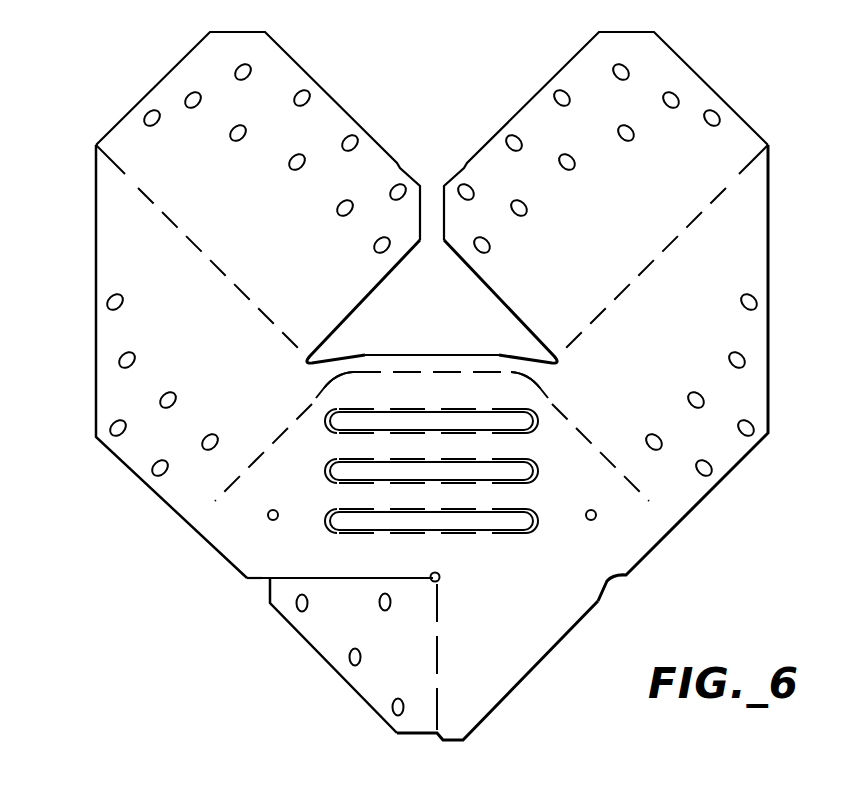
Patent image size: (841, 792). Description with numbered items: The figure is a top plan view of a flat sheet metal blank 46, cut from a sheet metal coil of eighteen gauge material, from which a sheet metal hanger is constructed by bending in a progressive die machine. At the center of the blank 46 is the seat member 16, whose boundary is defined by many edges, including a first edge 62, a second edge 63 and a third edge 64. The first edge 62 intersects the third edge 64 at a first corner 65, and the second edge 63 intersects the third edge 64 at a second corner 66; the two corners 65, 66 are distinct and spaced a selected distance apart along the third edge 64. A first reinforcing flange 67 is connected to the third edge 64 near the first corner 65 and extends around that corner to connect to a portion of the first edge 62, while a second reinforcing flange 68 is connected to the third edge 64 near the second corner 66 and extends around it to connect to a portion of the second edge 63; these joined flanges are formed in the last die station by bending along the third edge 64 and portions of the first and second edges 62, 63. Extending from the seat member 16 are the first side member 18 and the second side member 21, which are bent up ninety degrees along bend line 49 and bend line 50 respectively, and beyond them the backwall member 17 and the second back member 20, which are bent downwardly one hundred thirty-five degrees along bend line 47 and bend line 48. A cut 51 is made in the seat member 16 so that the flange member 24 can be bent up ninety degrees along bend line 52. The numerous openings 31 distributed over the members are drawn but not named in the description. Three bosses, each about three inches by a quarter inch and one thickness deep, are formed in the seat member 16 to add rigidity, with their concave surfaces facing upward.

The sheet metal blank 46 is at (426, 376).
The fastener holes 31 is at (243, 125).
The backwall member 17 is at (231, 197).
The first side member 18 is at (224, 361).
The second back member 20 is at (633, 197).
The second side member 21 is at (639, 373).
The seat member 16 is at (436, 522).
The flange member 24 is at (333, 655).
The bend line 47 is at (136, 186).
The bend line 48 is at (730, 186).
The bend line 49 is at (204, 512).
The bend line 50 is at (661, 512).
The cut 51 is at (300, 576).
The bend line 52 is at (446, 710).
The first edge 62 is at (240, 482).
The second edge 63 is at (624, 482).
The third edge 64 is at (432, 370).
The first corner 65 is at (346, 375).
The second corner 66 is at (518, 375).
The first reinforcing flange 67 is at (352, 363).
The second reinforcing flange 68 is at (516, 363).